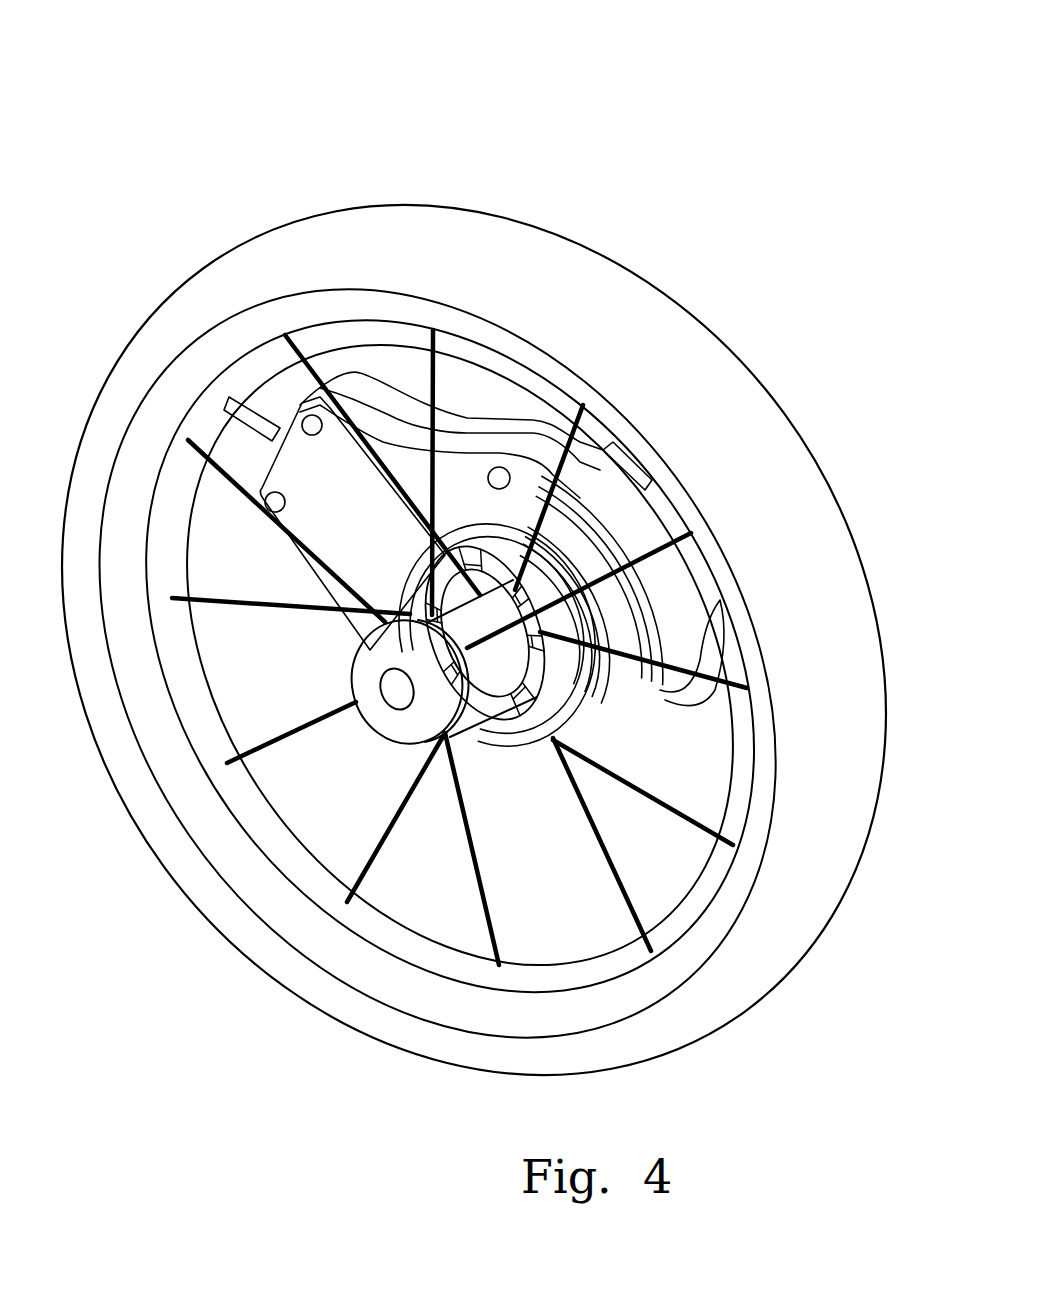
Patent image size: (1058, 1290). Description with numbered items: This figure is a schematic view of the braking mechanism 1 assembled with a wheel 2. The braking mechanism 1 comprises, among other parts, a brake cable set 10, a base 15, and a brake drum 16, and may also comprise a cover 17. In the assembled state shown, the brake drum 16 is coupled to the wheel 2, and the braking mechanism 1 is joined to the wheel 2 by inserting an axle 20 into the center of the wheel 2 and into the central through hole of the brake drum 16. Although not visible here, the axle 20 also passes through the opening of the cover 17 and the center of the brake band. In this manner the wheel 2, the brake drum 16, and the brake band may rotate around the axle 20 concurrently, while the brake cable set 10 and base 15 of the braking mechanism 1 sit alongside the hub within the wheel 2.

The braking mechanism 1 is at (520, 815).
The wheel 2 is at (631, 267).
The brake cable set 10 is at (257, 404).
The base 15 is at (460, 405).
The brake drum 16 is at (584, 689).
The cover 17 is at (347, 632).
The axle 20 is at (393, 693).